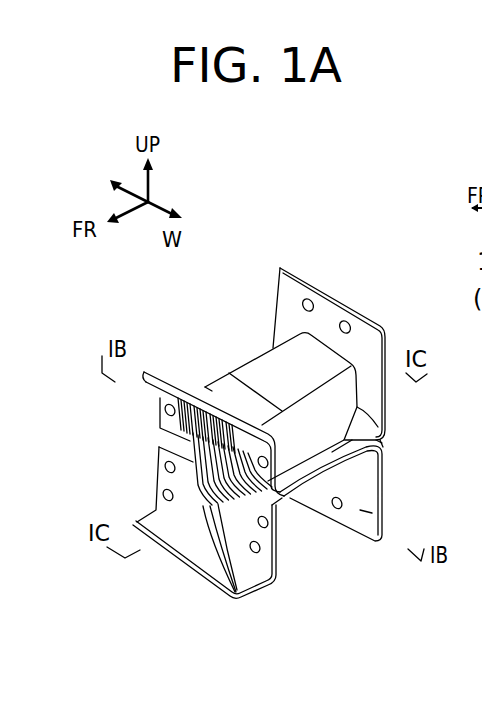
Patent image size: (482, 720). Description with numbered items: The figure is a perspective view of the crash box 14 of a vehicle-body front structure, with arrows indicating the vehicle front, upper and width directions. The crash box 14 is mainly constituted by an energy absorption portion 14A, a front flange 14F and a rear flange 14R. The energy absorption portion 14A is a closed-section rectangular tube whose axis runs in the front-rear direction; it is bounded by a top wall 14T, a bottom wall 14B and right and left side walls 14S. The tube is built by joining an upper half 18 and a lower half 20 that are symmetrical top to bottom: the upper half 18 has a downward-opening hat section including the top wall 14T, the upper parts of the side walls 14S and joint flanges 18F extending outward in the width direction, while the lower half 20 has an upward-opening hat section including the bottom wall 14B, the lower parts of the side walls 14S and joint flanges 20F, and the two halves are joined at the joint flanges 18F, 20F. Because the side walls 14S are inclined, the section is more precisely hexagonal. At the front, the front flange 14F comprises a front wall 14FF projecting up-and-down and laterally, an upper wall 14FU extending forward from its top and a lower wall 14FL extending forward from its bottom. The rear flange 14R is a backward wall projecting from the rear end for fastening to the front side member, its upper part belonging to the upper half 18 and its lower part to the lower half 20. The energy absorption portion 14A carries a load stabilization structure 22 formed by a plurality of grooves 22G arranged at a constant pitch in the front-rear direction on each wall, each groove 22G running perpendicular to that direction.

The crash box 14 is at (361, 284).
The rear flange 14R is at (316, 262).
The top wall 14T is at (250, 376).
The energy absorption portion 14A is at (204, 378).
The side wall 14S is at (298, 493).
The bottom wall 14B is at (302, 484).
The front flange 14F is at (173, 465).
The upper wall 14FU is at (147, 385).
The front wall 14FF is at (157, 505).
The lower wall 14FL is at (190, 552).
The load stabilization structure 22 is at (188, 500).
The groove 22G is at (237, 597).
The upper half 18 is at (412, 425).
The joint flange 18F is at (380, 441).
The lower half 20 is at (412, 484).
The joint flange 20F is at (360, 510).